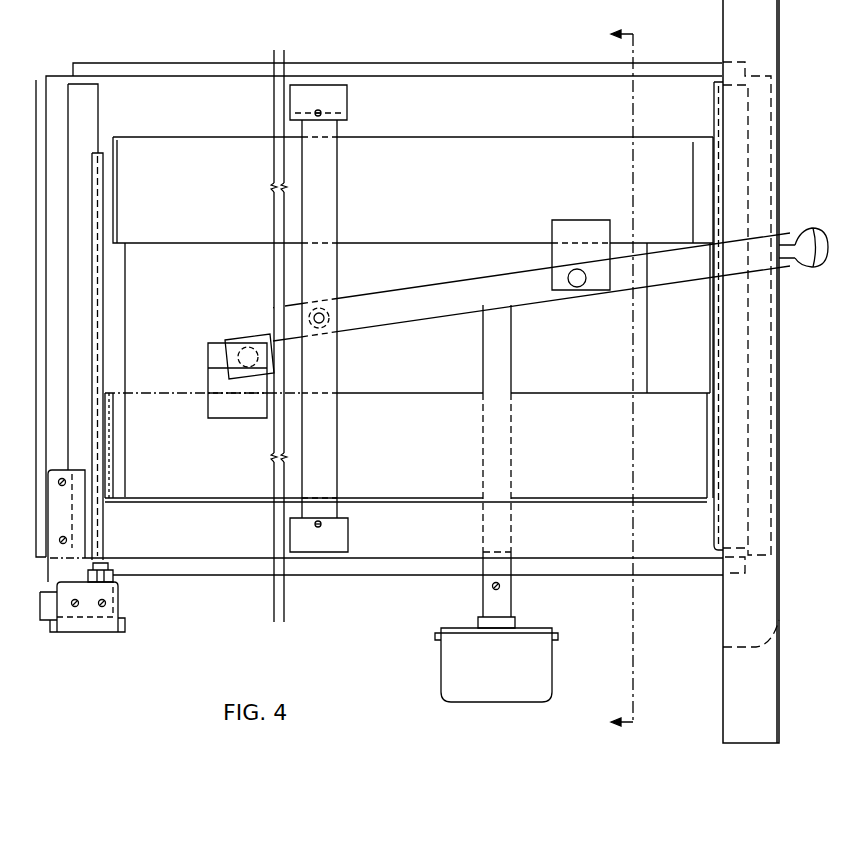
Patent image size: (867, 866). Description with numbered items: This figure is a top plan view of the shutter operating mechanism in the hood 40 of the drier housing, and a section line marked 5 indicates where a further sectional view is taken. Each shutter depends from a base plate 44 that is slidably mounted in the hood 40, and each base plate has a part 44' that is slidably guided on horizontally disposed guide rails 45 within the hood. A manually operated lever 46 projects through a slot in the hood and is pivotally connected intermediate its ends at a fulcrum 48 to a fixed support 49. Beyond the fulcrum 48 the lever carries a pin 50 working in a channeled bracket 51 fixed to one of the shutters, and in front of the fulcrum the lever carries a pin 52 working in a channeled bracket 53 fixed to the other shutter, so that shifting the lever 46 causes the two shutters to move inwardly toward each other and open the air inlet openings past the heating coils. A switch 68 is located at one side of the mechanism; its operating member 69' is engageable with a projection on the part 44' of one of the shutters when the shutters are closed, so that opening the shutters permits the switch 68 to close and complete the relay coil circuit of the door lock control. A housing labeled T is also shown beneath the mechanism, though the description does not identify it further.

The hood 40 is at (402, 548).
The base plate 44 is at (409, 299).
The part of base plate 44' is at (411, 317).
The guide rails 45 is at (93, 121).
The manually operated lever 46 is at (818, 226).
The fulcrum 48 is at (324, 326).
The fixed support 49 is at (333, 273).
The pin 50 is at (253, 323).
The channeled bracket 51 is at (207, 343).
The pin 52 is at (576, 286).
The channeled bracket 53 is at (606, 292).
The switch 68 is at (120, 598).
The operating member 69' is at (136, 558).
The thermostat T is at (547, 660).
The section line 5- 5 is at (606, 382).